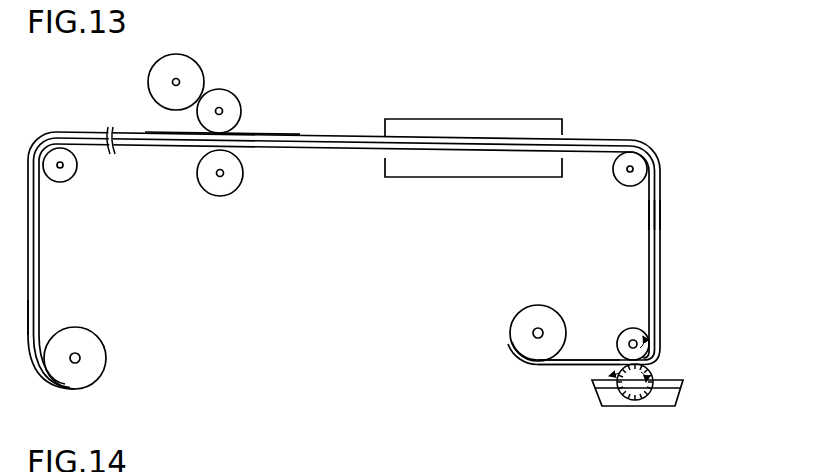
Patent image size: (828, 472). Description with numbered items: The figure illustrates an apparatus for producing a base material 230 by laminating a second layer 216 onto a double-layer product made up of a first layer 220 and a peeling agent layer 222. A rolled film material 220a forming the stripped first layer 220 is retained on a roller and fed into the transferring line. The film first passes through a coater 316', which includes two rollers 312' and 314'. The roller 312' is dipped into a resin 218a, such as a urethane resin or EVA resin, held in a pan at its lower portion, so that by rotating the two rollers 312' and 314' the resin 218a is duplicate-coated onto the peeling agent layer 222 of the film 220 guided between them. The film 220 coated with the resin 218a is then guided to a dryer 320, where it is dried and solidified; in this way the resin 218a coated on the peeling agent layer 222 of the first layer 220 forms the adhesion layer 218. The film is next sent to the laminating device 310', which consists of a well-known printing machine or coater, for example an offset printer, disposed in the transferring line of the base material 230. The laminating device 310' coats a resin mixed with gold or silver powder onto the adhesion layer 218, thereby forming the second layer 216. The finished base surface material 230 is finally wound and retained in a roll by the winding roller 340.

The second layer 216 is at (145, 131).
The adhesion layer 218 is at (334, 139).
The resin 218a is at (659, 219).
The first layer 220 is at (588, 358).
The rolled film material 220a is at (530, 318).
The peeling agent layer 222 is at (563, 366).
The base material 230 is at (78, 130).
The laminating device 310' is at (223, 85).
The roller 312' is at (616, 417).
The roller 314' is at (622, 314).
The coater 316' is at (656, 426).
The dryer 320 is at (482, 119).
The winding roller 340 is at (78, 352).